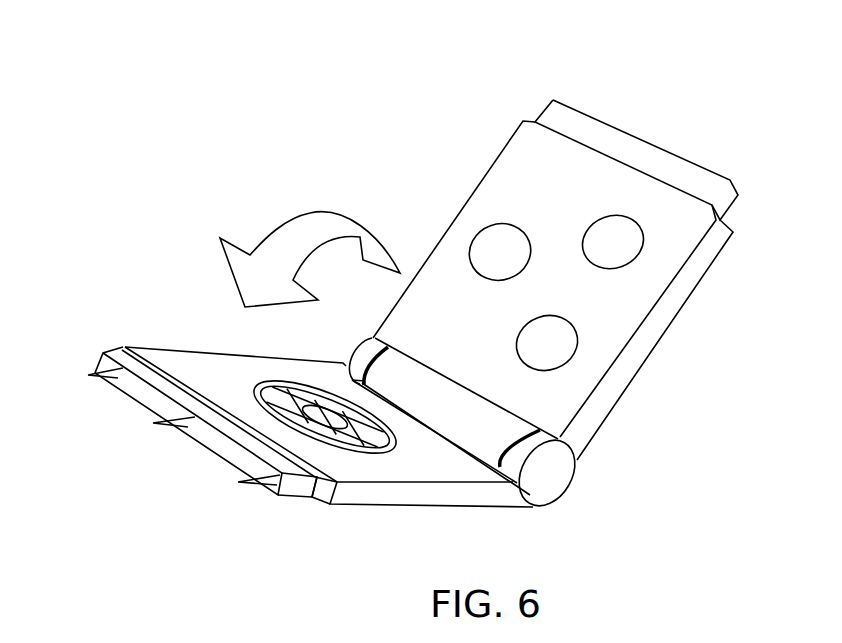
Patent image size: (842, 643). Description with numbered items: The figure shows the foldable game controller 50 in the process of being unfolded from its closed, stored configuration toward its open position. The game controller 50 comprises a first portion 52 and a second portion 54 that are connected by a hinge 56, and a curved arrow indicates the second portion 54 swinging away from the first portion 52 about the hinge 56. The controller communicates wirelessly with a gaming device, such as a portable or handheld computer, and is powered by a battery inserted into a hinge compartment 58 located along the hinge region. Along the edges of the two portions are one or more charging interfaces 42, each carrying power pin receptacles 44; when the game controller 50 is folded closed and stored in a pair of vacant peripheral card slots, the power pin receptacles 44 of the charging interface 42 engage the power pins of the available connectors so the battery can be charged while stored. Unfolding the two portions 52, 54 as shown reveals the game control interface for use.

The foldable game controller 50 is at (548, 77).
The charging interface 42 is at (645, 142).
The power pin receptacles 44 is at (88, 375).
The first portion 52 is at (200, 350).
The second portion 54 is at (470, 197).
The hinge 56 is at (553, 477).
The hinge compartment 58 is at (497, 433).